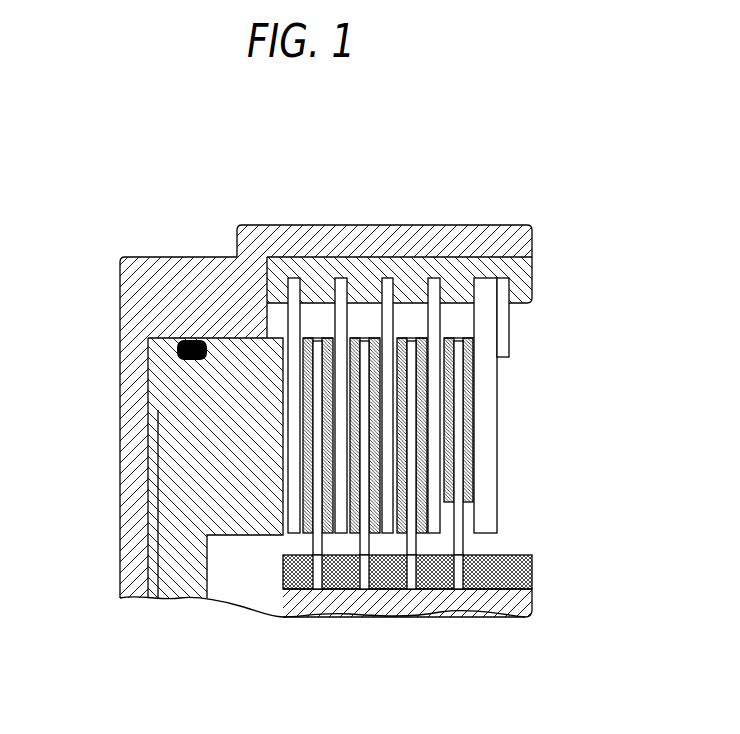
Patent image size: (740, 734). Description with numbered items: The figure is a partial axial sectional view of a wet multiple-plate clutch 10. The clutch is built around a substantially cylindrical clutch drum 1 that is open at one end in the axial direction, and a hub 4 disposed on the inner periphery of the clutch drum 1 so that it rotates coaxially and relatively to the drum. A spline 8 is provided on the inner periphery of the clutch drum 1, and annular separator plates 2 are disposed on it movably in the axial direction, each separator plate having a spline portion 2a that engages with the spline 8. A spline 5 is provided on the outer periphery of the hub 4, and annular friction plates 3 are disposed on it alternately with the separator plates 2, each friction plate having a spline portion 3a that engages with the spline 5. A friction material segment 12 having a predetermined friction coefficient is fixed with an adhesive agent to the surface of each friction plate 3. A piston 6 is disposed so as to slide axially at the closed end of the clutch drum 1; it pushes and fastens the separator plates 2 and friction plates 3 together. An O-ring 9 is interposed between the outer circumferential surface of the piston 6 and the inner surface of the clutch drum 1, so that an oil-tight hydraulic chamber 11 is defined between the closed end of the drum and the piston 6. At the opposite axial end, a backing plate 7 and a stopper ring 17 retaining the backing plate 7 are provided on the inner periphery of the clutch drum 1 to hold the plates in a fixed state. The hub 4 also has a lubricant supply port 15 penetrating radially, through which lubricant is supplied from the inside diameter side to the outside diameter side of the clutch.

The clutch drum 1 is at (312, 235).
The separator plates 2 is at (437, 327).
The spline portion 2a is at (386, 278).
The friction plates 3 is at (457, 485).
The spline portion 3a is at (313, 470).
The hub 4 is at (505, 603).
The spline 5 is at (510, 568).
The piston 6 is at (190, 400).
The backing plate 7 is at (490, 403).
The spline 8 is at (535, 260).
The O-ring 9 is at (193, 338).
The wet multiple-plate clutch 10 is at (521, 210).
The hydraulic chamber 11 is at (143, 488).
The friction material segment 12 is at (300, 472).
The lubricant supply port 15 is at (408, 590).
The stopper ring 17 is at (505, 327).